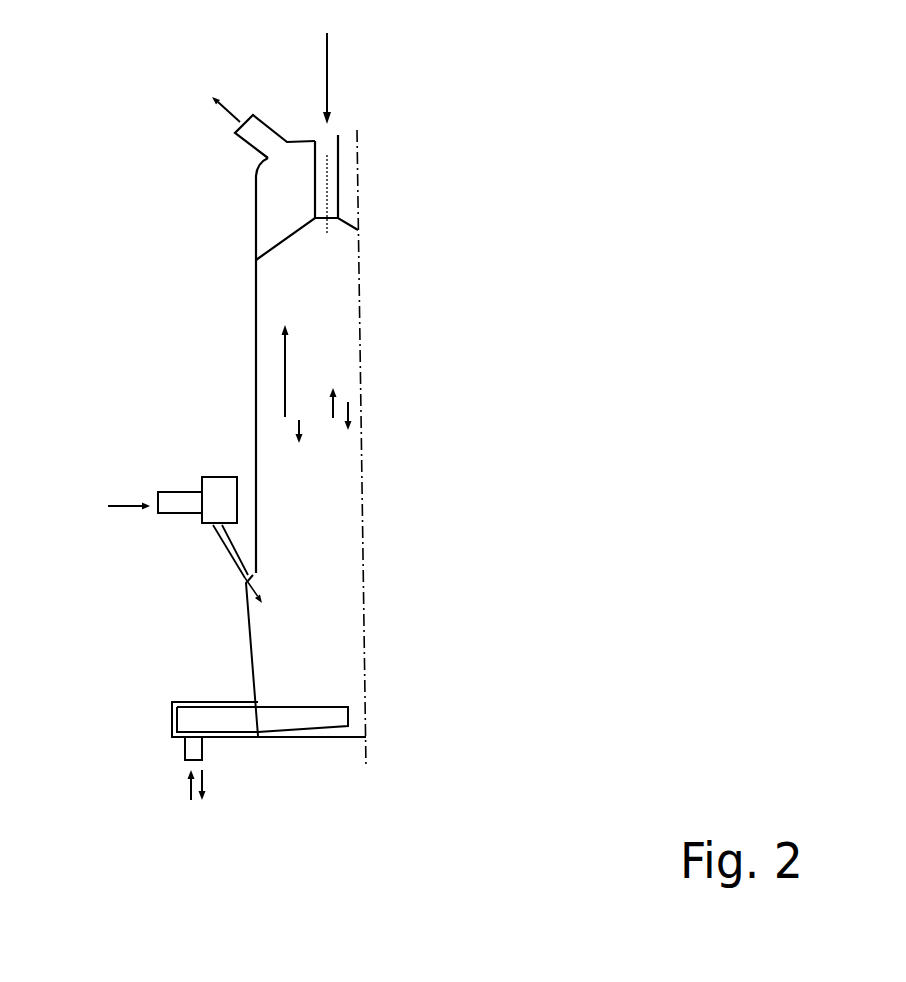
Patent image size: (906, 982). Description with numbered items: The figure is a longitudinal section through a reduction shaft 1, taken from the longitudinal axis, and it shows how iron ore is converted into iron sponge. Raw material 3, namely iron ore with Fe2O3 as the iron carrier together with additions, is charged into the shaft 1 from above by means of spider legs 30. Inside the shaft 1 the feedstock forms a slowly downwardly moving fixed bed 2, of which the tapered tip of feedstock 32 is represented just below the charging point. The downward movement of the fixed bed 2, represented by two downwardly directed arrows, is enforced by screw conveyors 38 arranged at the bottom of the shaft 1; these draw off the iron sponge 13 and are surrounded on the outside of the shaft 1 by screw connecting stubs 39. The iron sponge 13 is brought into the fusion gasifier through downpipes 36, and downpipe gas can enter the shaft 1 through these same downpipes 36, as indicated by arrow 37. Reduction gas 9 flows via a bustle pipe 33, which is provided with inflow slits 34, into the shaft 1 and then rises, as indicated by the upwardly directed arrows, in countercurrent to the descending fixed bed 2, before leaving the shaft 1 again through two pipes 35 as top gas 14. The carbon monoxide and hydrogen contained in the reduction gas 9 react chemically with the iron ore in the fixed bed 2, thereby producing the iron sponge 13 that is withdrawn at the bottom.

The reduction shaft 1 is at (255, 330).
The fixed bed 2 is at (343, 523).
The raw material 3 is at (321, 62).
The reduction gas 9 is at (143, 507).
The iron sponge 13 is at (203, 798).
The top gas 14 is at (205, 91).
The spider legs 30 is at (345, 190).
The tapered tip of feedstock 32 is at (283, 250).
The bustle pipe 33 is at (208, 472).
The inflow slits 34 is at (240, 578).
The pipes 35 is at (247, 145).
The downpipes 36 is at (202, 752).
The arrow 37 is at (183, 780).
The screw conveyors 38 is at (322, 717).
The screw connecting stubs 39 is at (193, 703).